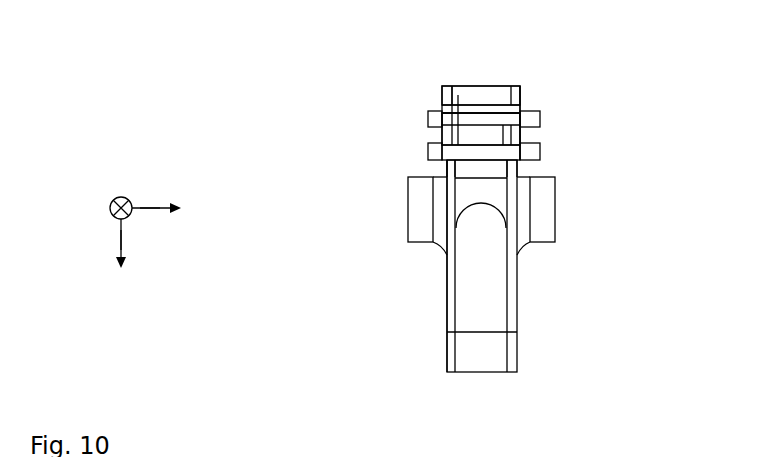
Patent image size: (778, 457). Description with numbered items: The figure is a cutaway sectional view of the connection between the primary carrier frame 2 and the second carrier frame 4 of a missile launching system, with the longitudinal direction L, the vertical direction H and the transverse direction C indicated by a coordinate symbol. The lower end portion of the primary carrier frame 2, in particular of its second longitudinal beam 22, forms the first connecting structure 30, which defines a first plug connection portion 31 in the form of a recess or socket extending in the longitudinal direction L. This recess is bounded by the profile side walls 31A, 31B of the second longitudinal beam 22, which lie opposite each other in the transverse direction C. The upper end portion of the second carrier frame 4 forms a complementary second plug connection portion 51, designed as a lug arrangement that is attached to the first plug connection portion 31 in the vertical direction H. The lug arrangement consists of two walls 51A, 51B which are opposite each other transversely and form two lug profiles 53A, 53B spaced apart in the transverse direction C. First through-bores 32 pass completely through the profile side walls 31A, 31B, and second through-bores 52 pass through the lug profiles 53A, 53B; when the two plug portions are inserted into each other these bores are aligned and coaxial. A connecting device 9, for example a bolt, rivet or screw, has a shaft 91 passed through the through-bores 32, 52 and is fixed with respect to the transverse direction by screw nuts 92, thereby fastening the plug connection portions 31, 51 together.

The primary carrier frame 2 is at (501, 130).
The second carrier frame 4 is at (509, 266).
The connecting device 9 is at (428, 119).
The second longitudinal beam 22 is at (521, 87).
The first connecting structure 30 is at (523, 95).
The first plug connection portion 31 is at (461, 96).
The profile side wall 31A is at (445, 136).
The profile side wall 31B is at (521, 135).
The first through-bore 32 is at (448, 163).
The second plug connection portion 51 is at (488, 104).
The wall 51A is at (452, 104).
The wall 51B is at (512, 123).
The second through-bore 52 is at (452, 163).
The lug profile 53A is at (394, 90).
The lug profile 53B is at (613, 116).
The shaft 91 is at (480, 162).
The screw nut 92 is at (432, 155).
The longitudinal direction L is at (117, 198).
The vertical direction H is at (121, 238).
The transverse direction C is at (140, 208).